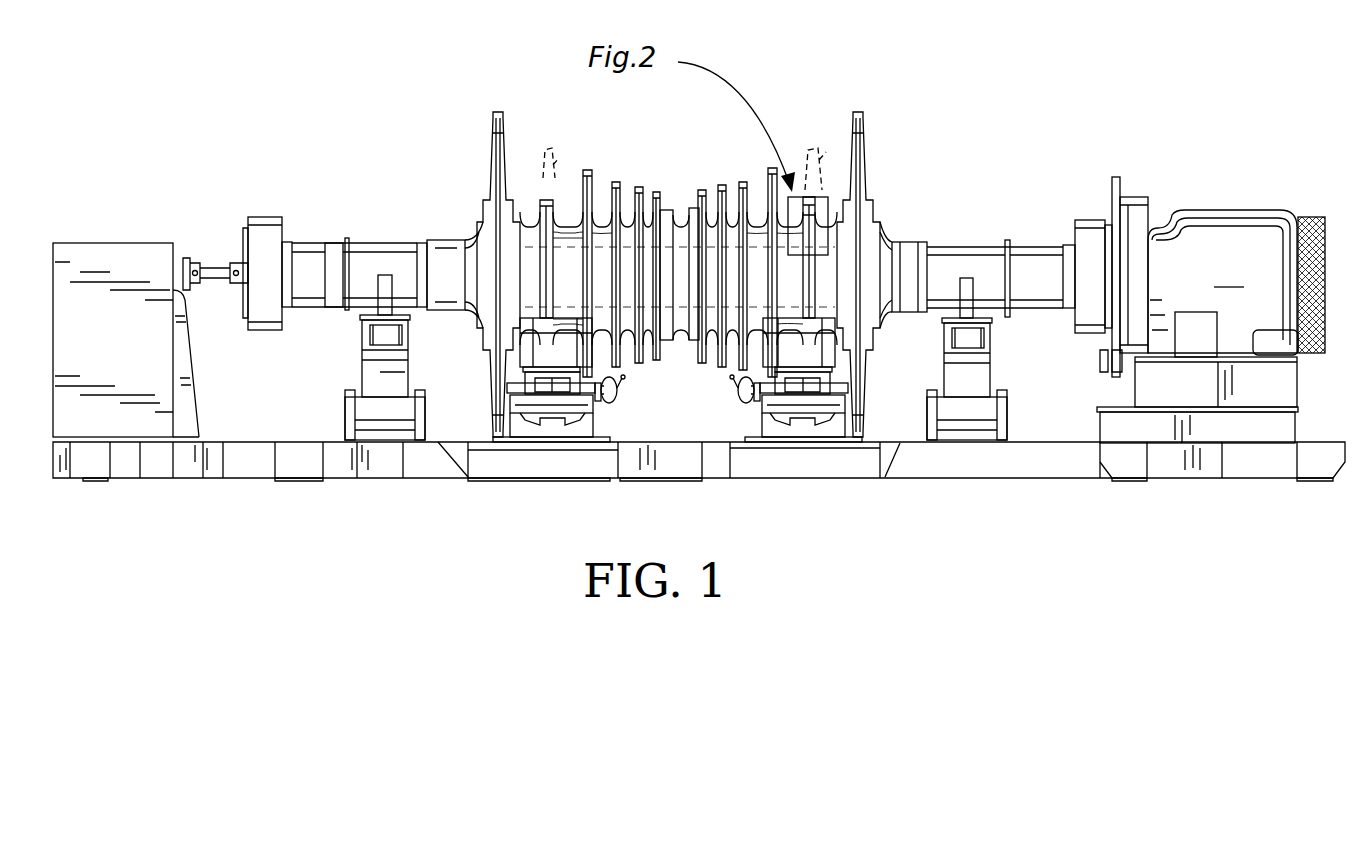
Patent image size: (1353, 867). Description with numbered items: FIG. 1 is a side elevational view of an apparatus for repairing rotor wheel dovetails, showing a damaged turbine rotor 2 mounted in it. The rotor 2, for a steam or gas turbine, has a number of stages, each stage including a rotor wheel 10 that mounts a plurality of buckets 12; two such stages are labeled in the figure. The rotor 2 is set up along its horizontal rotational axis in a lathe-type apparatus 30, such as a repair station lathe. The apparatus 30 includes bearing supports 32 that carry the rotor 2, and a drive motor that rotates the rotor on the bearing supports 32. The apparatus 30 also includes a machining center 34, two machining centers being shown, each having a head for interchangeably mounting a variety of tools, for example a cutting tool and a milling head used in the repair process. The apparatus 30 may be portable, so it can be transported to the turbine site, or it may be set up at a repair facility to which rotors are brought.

The rotor 2 is at (416, 141).
The rotor wheel 10 is at (553, 212).
The buckets 12 is at (562, 165).
The lathe-type apparatus 30 is at (329, 506).
The bearing supports 32 is at (362, 357).
The machining center 34 is at (760, 427).